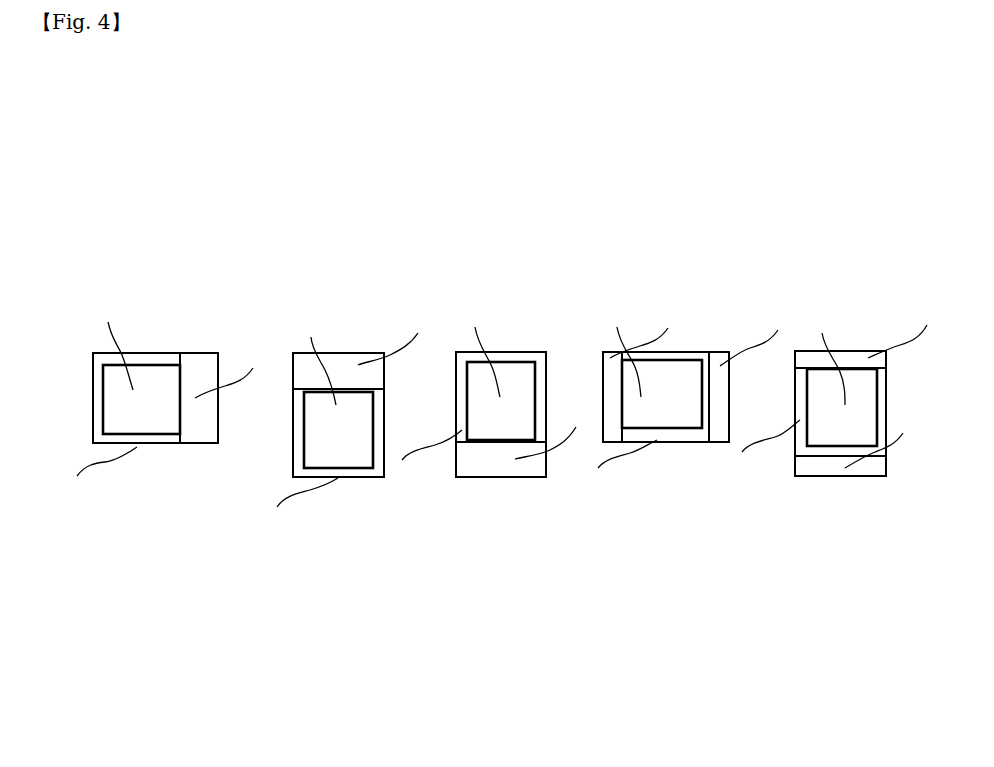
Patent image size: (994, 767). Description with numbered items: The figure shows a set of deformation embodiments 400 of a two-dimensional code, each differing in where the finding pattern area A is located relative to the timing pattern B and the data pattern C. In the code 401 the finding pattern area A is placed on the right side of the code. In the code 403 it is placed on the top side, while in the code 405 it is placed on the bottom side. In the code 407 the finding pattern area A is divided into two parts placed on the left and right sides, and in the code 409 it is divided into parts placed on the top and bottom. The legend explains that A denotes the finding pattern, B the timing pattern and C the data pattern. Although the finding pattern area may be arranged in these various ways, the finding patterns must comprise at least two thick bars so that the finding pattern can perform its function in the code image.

The two-dimensional code patterns 400 is at (857, 665).
The code 401 is at (150, 350).
The code 403 is at (333, 350).
The code 405 is at (493, 347).
The code 407 is at (672, 348).
The code 409 is at (838, 348).